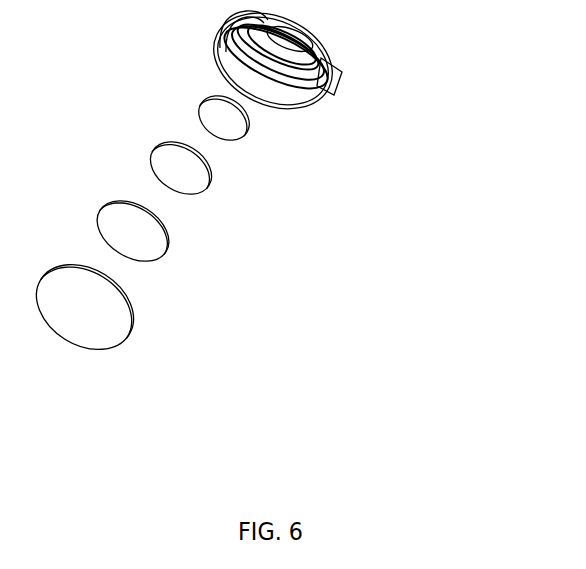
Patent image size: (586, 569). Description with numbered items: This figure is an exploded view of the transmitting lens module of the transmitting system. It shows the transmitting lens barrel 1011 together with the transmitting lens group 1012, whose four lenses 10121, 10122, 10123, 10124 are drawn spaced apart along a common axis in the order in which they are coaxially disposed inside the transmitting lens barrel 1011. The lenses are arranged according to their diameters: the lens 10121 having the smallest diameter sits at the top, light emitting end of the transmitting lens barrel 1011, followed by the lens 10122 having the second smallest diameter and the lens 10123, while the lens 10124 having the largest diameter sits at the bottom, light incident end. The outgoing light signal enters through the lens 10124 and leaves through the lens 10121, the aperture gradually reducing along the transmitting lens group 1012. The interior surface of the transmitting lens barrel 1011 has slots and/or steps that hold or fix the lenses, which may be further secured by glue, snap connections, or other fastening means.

The transmitting lens barrel 1011 is at (310, 82).
The transmitting lens group 1012 is at (340, 457).
The lens having the smallest diameter 10121 is at (306, 153).
The lens having the second smallest diameter 10122 is at (275, 201).
The lens 10123 is at (228, 256).
The lens having the largest diameter 10124 is at (175, 352).